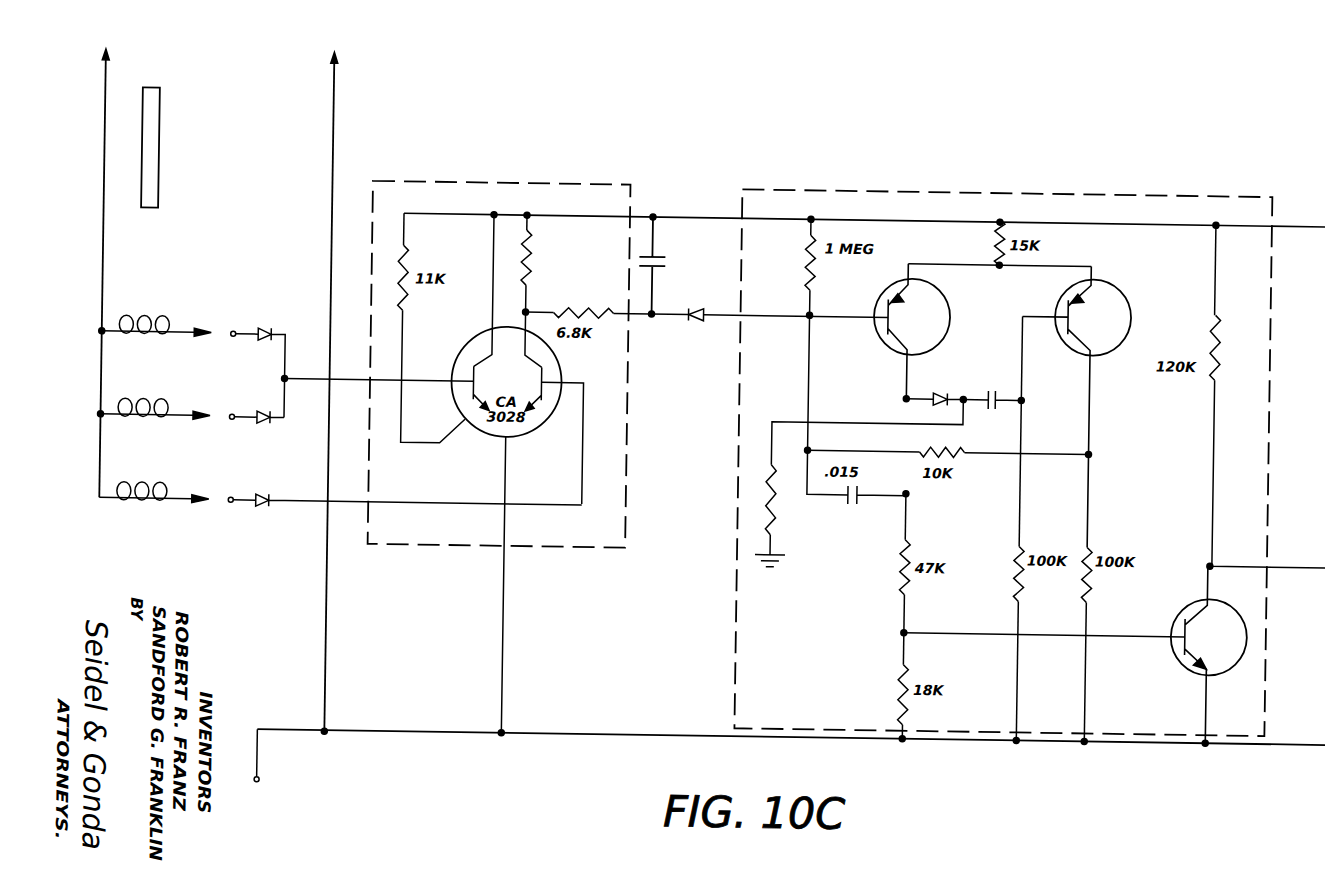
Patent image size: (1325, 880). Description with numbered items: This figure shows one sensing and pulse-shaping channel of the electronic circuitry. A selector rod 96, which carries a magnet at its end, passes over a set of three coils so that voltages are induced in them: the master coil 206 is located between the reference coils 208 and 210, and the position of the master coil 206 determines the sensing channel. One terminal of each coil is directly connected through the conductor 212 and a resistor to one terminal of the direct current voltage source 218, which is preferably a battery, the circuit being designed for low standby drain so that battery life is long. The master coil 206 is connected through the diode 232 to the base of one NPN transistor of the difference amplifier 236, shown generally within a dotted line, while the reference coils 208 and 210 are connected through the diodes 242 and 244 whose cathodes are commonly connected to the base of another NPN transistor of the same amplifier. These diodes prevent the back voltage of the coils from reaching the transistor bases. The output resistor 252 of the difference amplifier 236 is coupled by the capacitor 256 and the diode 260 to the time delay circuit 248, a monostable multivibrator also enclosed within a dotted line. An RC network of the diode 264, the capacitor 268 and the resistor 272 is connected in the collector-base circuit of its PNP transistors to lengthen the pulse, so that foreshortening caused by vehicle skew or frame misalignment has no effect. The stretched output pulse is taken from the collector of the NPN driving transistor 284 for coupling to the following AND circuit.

The conductor 212 is at (106, 80).
The selector rod 96 is at (150, 167).
The reference coil 210 is at (196, 301).
The reference coil 208 is at (172, 393).
The master coil 206 is at (148, 496).
The diode 244 is at (266, 332).
The diode 242 is at (266, 416).
The diode 232 is at (267, 511).
The direct current voltage source 218 is at (268, 783).
The difference amplifier 236 is at (588, 183).
The output resistor 252 is at (533, 258).
The capacitor 256 is at (660, 258).
The diode 260 is at (699, 323).
The time delay circuit 248 is at (985, 185).
The diode 264 is at (970, 374).
The capacitor 268 is at (998, 386).
The resistor 272 is at (772, 500).
The NPN driving transistor 284 is at (1193, 676).